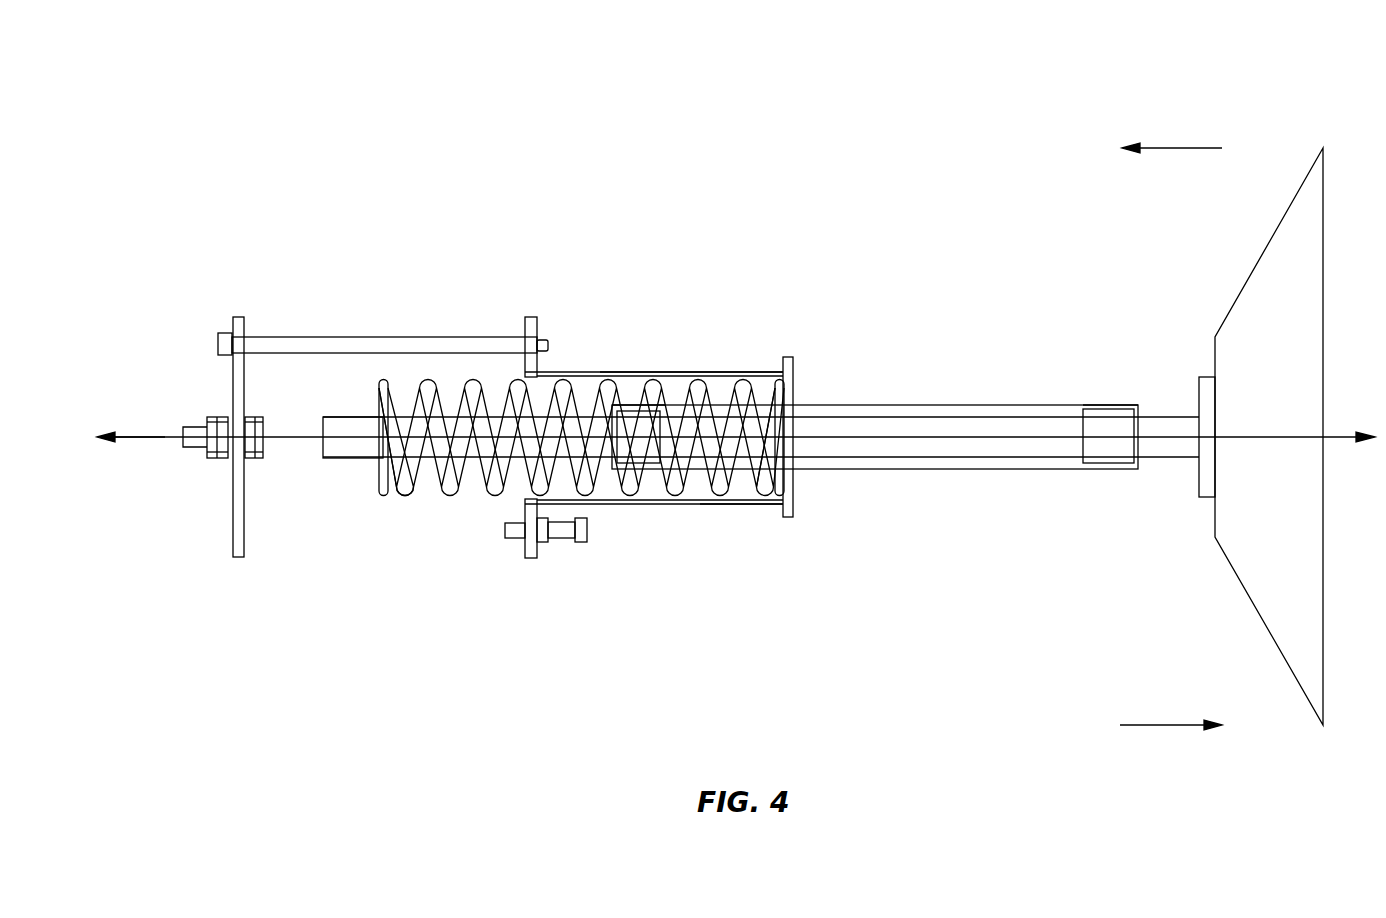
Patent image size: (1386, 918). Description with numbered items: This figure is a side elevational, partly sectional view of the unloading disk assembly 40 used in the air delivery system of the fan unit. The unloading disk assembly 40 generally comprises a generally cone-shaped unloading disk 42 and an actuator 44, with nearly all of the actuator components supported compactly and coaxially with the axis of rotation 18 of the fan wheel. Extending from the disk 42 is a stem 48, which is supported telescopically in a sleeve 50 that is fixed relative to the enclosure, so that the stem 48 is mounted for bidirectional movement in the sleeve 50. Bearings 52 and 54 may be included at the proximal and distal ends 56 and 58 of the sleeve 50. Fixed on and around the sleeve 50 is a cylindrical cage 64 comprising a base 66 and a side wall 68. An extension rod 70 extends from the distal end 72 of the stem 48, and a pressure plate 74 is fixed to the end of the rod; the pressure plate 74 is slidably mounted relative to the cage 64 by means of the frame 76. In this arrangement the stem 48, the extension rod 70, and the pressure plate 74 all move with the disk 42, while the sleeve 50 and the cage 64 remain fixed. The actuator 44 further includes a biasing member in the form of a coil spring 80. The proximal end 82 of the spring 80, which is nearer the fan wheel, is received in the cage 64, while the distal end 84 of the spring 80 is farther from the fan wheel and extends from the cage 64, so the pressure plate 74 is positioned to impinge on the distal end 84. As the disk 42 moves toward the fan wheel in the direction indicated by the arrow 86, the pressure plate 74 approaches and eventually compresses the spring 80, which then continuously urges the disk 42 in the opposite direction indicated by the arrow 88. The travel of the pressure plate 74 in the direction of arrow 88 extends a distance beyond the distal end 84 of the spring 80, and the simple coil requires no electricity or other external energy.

The axis of rotation 18 is at (154, 437).
The unloading disk assembly 40 is at (860, 308).
The unloading disk 42 is at (1265, 250).
The actuator 44 is at (707, 504).
The stem 48 is at (1167, 458).
The sleeve 50 is at (875, 470).
The bearing 52 is at (1110, 471).
The bearing 54 is at (652, 468).
The proximal end of the sleeve 56 is at (1113, 405).
The distal end of the sleeve 58 is at (628, 406).
The cylindrical cage 64 is at (763, 504).
The base 66 is at (795, 487).
The side wall 68 is at (697, 372).
The extension rod 70 is at (302, 441).
The distal end of the stem 72 is at (356, 417).
The pressure plate 74 is at (245, 529).
The frame 76 is at (376, 337).
The coil spring 80 is at (449, 495).
The proximal end of the spring 82 is at (755, 443).
The distal end of the spring 84 is at (404, 495).
The arrow 86 is at (1178, 728).
The arrow 88 is at (1172, 151).